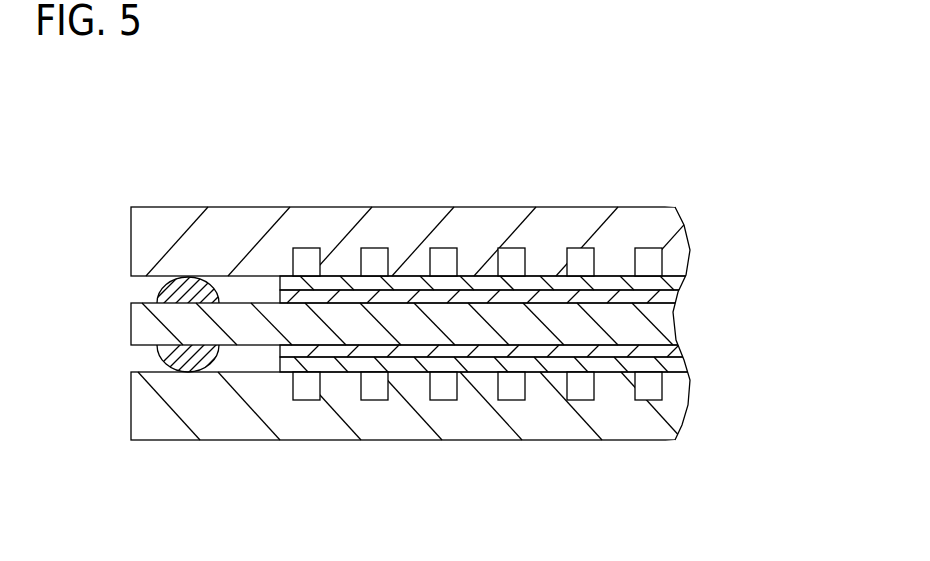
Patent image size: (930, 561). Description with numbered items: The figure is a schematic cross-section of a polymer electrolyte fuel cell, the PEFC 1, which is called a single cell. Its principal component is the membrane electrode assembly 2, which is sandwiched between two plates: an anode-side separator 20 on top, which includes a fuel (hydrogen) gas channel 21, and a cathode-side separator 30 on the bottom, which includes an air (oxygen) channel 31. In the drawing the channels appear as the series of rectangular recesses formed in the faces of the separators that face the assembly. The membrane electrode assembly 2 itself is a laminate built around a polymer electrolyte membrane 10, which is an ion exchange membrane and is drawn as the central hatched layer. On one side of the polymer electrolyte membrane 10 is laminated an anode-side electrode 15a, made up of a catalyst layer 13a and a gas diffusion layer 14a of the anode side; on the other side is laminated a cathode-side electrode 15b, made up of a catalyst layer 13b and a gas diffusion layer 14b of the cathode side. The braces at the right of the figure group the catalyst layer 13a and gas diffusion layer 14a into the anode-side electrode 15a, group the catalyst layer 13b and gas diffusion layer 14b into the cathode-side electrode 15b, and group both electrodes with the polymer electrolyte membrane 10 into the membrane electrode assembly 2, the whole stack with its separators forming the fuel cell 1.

The PEFC (fuel cell) 1 is at (127, 169).
The membrane electrode assembly 2 is at (517, 321).
The polymer electrolyte membrane 10 is at (675, 322).
The catalyst layer 13a is at (668, 291).
The catalyst layer 13b is at (673, 347).
The gas diffusion layer 14a is at (673, 281).
The gas diffusion layer 14b is at (680, 363).
The anode-side electrode 15a is at (565, 261).
The cathode-side electrode 15b is at (566, 381).
The anode-side separator 20 is at (416, 200).
The fuel gas channel 21 is at (510, 255).
The cathode-side separator 30 is at (416, 447).
The air channel 31 is at (375, 392).